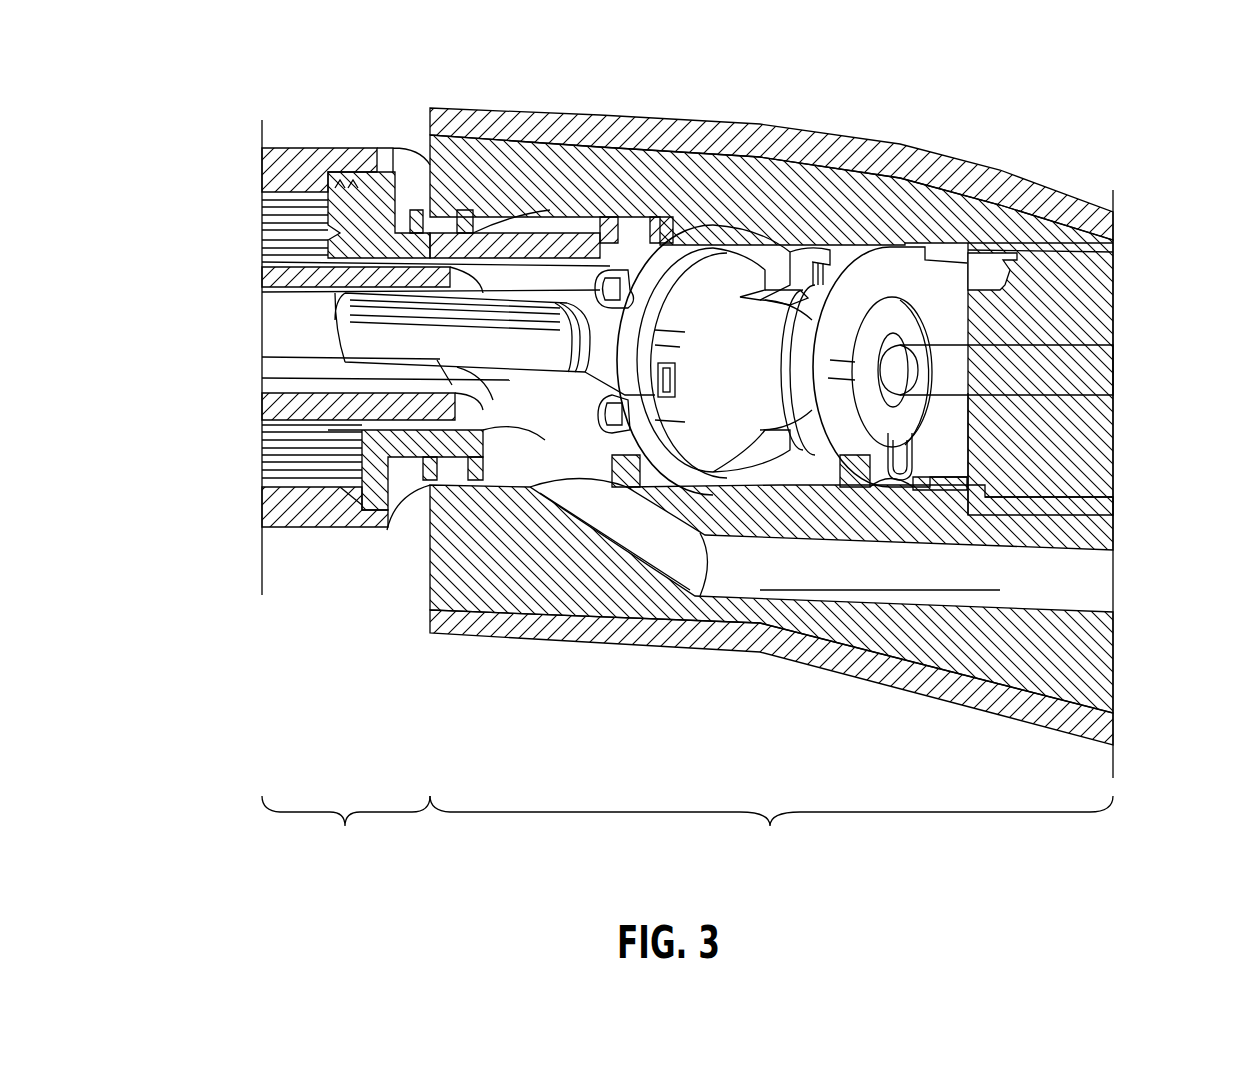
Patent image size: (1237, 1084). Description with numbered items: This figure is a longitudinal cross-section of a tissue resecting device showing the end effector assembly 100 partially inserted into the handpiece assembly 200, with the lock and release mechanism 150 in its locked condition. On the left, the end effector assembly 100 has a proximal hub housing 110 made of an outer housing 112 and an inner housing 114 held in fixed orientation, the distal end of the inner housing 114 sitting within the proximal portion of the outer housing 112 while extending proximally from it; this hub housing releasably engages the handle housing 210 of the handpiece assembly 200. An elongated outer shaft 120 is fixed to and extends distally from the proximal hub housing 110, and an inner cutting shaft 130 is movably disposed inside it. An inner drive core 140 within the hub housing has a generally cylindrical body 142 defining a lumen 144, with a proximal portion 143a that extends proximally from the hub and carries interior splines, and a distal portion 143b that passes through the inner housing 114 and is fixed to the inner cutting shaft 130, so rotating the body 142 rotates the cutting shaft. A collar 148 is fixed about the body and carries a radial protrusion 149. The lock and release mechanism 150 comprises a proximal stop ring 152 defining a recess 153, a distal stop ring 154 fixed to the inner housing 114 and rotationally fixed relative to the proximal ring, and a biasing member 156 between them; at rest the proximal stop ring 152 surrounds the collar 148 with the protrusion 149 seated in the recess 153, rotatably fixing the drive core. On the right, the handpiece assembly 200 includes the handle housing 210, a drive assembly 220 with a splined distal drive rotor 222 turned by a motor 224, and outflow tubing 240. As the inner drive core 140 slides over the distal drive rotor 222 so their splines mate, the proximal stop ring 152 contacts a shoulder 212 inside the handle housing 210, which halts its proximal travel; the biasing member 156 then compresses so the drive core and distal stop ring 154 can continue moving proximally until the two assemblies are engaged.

The end effector assembly 100 is at (346, 831).
The handpiece assembly 200 is at (771, 831).
The proximal hub housing 110 is at (334, 510).
The outer housing 112 is at (305, 177).
The inner housing 114 is at (388, 177).
The elongated outer shaft 120 is at (275, 233).
The inner cutting shaft 130 is at (275, 272).
The inner drive core 140 is at (713, 500).
The body 142 is at (737, 455).
The proximal portion 143a is at (771, 296).
The distal portion 143b is at (610, 337).
The lumen 144 is at (900, 318).
The collar 148 is at (990, 270).
The protrusion 149 is at (907, 450).
The lock and release mechanism 150 is at (800, 488).
The proximal stop ring 152 is at (975, 246).
The recess 153 is at (907, 483).
The distal stop ring 154 is at (715, 280).
The biasing member 156 is at (808, 262).
The handle housing 210 is at (577, 633).
The shoulder 212 is at (908, 243).
The drive assembly 220 is at (1085, 457).
The distal drive rotor 222 is at (905, 345).
The motor 224 is at (1087, 380).
The outflow tubing 240 is at (1007, 587).